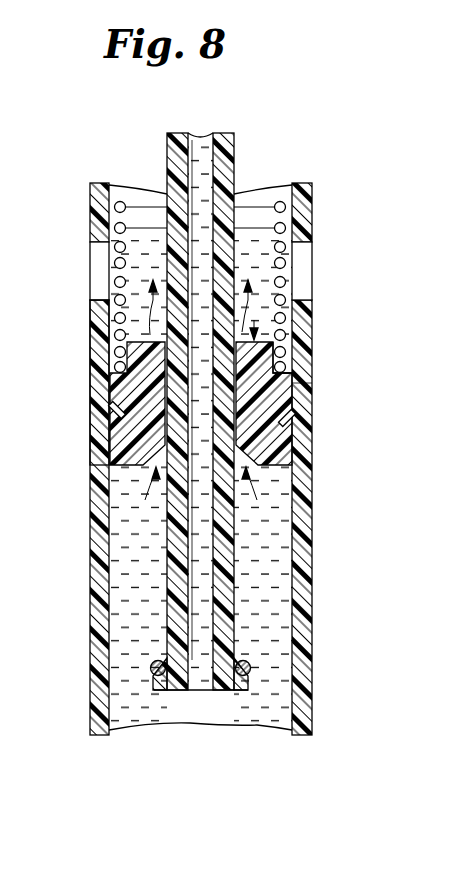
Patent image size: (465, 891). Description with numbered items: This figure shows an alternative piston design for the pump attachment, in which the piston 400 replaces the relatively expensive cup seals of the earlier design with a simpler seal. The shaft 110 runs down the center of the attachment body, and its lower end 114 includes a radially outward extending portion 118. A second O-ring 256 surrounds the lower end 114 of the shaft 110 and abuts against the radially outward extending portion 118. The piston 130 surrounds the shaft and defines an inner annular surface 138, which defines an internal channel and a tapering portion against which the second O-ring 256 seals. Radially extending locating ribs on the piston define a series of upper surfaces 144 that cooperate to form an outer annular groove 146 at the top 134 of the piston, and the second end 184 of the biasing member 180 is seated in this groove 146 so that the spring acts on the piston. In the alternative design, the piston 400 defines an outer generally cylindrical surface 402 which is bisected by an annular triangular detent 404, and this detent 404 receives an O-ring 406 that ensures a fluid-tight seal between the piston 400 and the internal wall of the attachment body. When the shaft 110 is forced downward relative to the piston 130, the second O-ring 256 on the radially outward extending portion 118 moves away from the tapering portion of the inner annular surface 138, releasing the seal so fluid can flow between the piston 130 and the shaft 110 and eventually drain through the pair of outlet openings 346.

The shaft 110 is at (237, 176).
The biasing member 180 is at (305, 203).
The top 134 is at (122, 290).
The outlet openings 346 is at (305, 256).
The outer annular groove 146 is at (108, 352).
The inner annular surface 138 is at (150, 383).
The O-ring 406 is at (108, 408).
The piston 400 is at (255, 320).
The piston 130 is at (285, 343).
The second end 184 is at (303, 356).
The upper surfaces 144 is at (297, 366).
The outer generally cylindrical surface 402 is at (310, 386).
The annular triangular detent 404 is at (310, 424).
The second O-ring 256 is at (249, 666).
The radially outward extending portion 118 is at (249, 684).
The lower end 114 is at (167, 676).